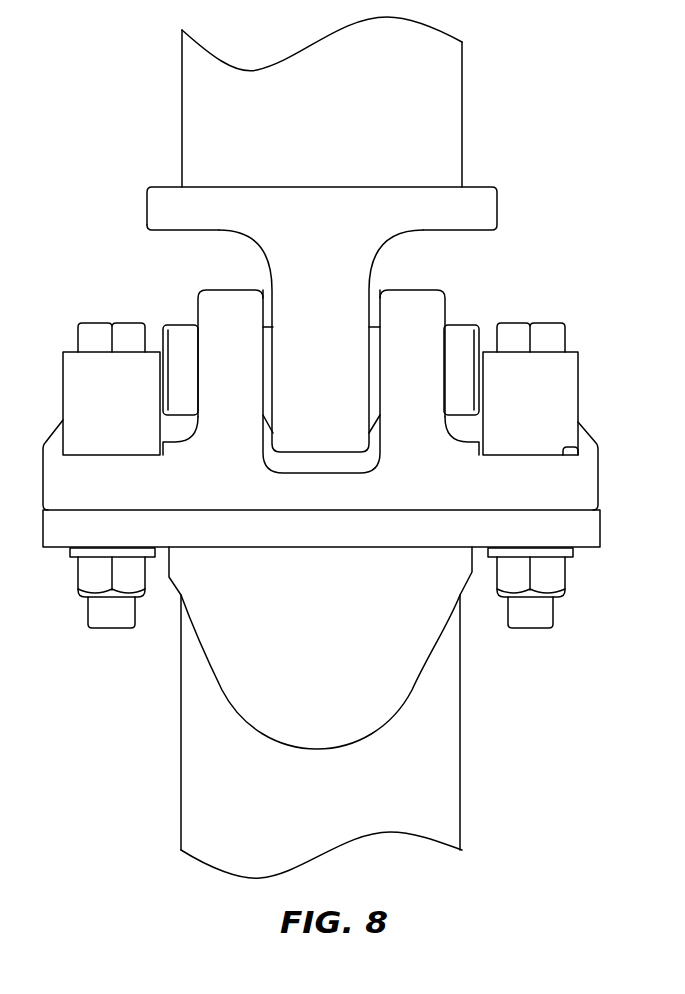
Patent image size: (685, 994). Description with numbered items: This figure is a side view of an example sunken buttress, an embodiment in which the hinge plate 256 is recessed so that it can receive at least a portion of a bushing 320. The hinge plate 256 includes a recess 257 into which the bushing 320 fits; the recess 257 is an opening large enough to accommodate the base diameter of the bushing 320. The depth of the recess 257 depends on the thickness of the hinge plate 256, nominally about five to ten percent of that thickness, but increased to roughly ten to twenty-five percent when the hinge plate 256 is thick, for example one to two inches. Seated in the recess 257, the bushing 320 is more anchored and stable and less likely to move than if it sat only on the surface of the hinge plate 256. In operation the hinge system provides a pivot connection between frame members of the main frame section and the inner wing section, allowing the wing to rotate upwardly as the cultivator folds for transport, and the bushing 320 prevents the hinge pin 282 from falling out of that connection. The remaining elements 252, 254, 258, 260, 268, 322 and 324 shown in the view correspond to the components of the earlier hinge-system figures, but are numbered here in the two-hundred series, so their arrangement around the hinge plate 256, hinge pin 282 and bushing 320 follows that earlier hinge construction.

The lower pipe section 252 is at (220, 463).
The upper pipe flange 254 is at (478, 200).
The hinge plate 256 is at (466, 490).
The recess 257 is at (565, 457).
The clamp arm 258 is at (228, 335).
The mounting plate 260 is at (426, 541).
The pipe neck 268 is at (322, 317).
The hinge pin 282 is at (462, 332).
The bushing 320 is at (82, 380).
The upper nut 322 is at (555, 332).
The lower nut 324 is at (552, 575).